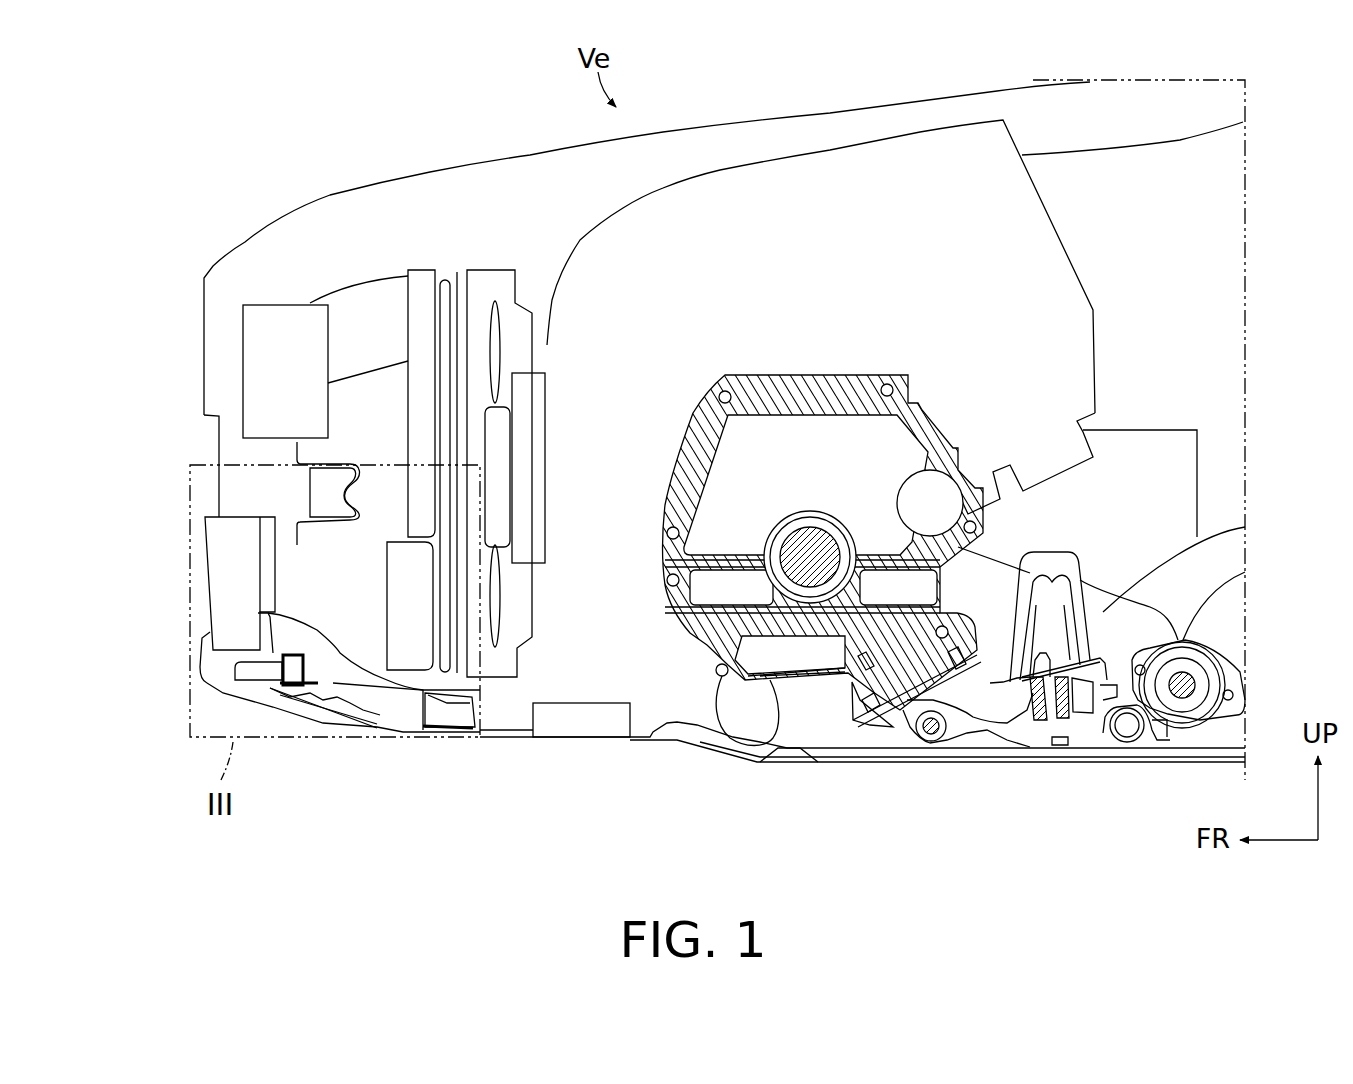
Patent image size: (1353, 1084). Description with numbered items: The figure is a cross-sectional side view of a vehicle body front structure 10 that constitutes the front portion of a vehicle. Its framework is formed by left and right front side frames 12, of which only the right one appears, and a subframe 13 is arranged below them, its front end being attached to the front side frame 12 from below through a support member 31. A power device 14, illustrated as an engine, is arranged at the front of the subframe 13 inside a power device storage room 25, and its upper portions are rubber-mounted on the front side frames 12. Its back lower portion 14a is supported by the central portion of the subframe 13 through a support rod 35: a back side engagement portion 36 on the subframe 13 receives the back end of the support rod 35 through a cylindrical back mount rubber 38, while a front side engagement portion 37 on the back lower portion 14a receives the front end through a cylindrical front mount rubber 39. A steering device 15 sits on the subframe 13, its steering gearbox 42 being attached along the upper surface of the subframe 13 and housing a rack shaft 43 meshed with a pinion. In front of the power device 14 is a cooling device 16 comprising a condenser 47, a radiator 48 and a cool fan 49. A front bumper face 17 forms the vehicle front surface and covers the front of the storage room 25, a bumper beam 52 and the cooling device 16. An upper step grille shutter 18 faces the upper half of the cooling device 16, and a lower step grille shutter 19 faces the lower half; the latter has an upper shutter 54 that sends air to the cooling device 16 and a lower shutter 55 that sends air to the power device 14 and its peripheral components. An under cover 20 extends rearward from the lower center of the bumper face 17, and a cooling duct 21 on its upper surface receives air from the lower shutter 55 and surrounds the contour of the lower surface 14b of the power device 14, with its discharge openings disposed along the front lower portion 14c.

The vehicle body front structure 10 is at (750, 112).
The front side frame 12 is at (1113, 482).
The subframe 13 is at (1112, 682).
The power device 14 is at (895, 541).
The back lower portion 14a is at (900, 685).
The lower surface 14b is at (773, 693).
The front lower portion 14c is at (713, 673).
The steering device 15 is at (1239, 694).
The cooling device 16 is at (442, 367).
The front bumper face 17 is at (193, 670).
The upper step grille shutter 18 is at (266, 360).
The lower step grille shutter 19 is at (165, 585).
The under cover 20 is at (558, 740).
The cooling duct 21 is at (382, 715).
The power device storage room 25 is at (793, 542).
The support member 31 is at (1060, 620).
The support rod 35 is at (988, 740).
The back side engagement portion 36 is at (1057, 733).
The front side engagement portion 37 is at (880, 750).
The back mount rubber 38 is at (1070, 720).
The front mount rubber 39 is at (943, 743).
The steering gearbox 42 is at (1207, 680).
The rack shaft 43 is at (1193, 700).
The condenser 47 is at (418, 297).
The radiator 48 is at (455, 293).
The cool fan 49 is at (495, 320).
The bumper beam 52 is at (312, 497).
The upper shutter 54 is at (208, 553).
The lower shutter 55 is at (110, 518).